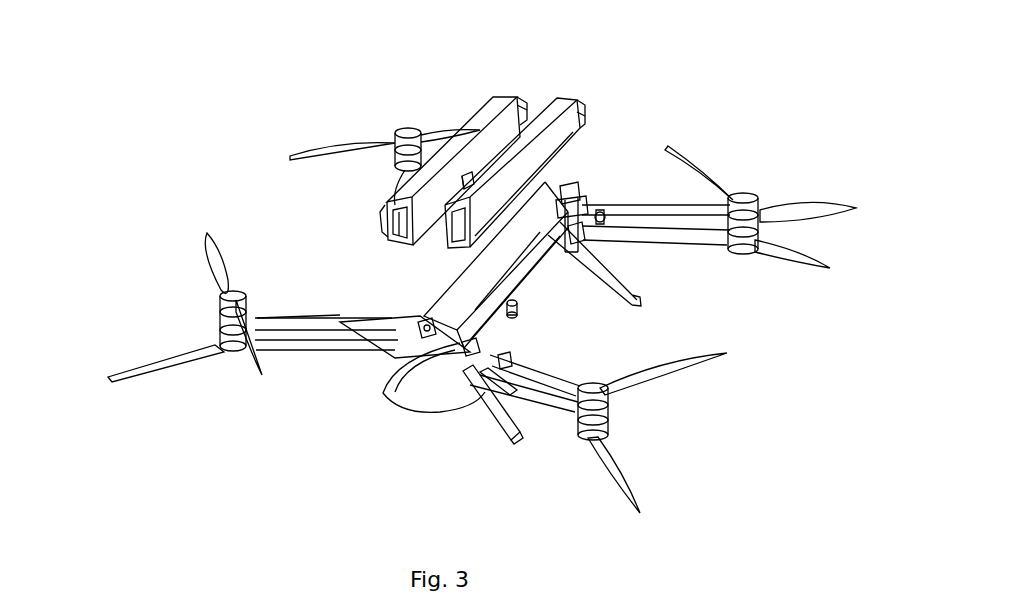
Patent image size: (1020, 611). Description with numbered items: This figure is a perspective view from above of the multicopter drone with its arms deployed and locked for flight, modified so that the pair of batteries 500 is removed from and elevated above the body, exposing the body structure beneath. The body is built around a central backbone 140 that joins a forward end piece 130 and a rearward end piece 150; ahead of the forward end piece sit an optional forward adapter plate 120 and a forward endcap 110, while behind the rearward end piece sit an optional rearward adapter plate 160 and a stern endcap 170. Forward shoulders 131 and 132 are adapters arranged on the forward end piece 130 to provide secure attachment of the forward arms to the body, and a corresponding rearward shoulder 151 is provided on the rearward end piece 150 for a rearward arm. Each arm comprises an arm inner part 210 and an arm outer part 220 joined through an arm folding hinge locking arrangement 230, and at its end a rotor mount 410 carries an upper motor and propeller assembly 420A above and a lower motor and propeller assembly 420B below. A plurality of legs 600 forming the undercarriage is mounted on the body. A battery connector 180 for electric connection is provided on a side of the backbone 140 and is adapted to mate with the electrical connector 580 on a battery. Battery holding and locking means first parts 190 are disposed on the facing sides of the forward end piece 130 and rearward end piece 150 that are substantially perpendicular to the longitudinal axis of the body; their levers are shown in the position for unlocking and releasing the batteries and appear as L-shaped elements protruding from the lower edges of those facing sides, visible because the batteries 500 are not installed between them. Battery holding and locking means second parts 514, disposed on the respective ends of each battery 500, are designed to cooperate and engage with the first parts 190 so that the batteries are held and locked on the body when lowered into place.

The forward endcap 110 is at (390, 370).
The forward adapter plate 120 is at (418, 345).
The forward end piece 130 is at (405, 320).
The forward shoulder 131 is at (470, 348).
The forward shoulder 132 is at (383, 327).
The backbone 140 is at (468, 292).
The rearward end piece 150 is at (573, 201).
The rearward shoulder 151 is at (598, 217).
The rearward adapter plate 160 is at (560, 204).
The stern endcap 170 is at (570, 188).
The battery connector 180 is at (518, 307).
The battery holding and locking means first parts 190 is at (425, 333).
The arm inner part 210 is at (488, 358).
The arm outer part 220 is at (527, 370).
The arm folding hinge locking arrangement 230 is at (503, 362).
The rotor mount 410 is at (593, 410).
The upper motor and propeller assembly 420A is at (598, 400).
The lower motor and propeller assembly 420B is at (593, 437).
The battery 500 is at (490, 98).
The battery holding and locking means second parts 514 is at (523, 102).
The mating electrical connector 580 is at (474, 182).
The leg 600 is at (370, 400).